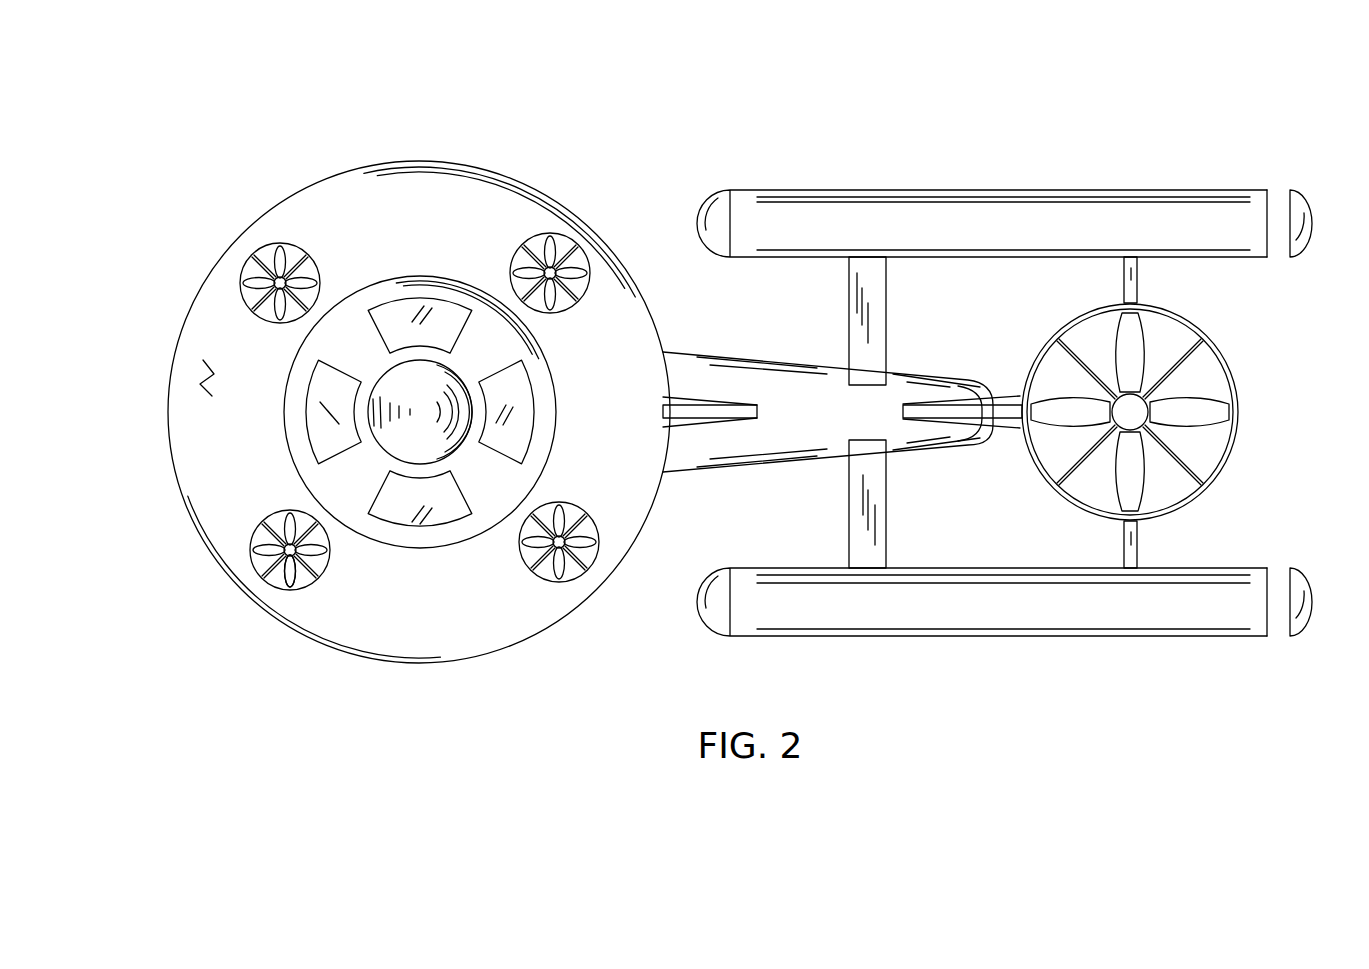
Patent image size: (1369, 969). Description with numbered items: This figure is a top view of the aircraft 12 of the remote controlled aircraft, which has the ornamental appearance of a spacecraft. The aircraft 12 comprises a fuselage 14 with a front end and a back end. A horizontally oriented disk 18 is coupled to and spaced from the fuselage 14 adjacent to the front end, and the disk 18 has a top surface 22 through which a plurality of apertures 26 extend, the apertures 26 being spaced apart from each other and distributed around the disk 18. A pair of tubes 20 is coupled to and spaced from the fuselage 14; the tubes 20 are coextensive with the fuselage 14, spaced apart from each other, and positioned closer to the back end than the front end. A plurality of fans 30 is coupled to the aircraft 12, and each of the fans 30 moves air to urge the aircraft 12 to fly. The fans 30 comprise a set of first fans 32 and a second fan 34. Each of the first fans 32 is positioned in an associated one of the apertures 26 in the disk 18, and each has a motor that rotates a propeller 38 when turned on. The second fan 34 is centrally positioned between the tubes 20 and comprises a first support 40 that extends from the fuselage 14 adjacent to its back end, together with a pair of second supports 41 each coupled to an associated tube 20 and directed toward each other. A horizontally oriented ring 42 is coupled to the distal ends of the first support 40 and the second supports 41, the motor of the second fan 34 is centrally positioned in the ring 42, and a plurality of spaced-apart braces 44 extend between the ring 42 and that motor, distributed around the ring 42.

The aircraft 12 is at (872, 162).
The fuselage 14 is at (788, 470).
The disk 18 is at (368, 165).
The tubes 20 is at (1018, 190).
The top surface 22 is at (204, 372).
The apertures 26 is at (291, 258).
The fans 30 is at (340, 587).
The first fans 32 is at (262, 523).
The second fan 34 is at (1238, 440).
The propeller 38 is at (290, 582).
The first support 40 is at (962, 405).
The second supports 41 is at (1135, 280).
The ring 42 is at (1195, 505).
The braces 44 is at (1075, 455).